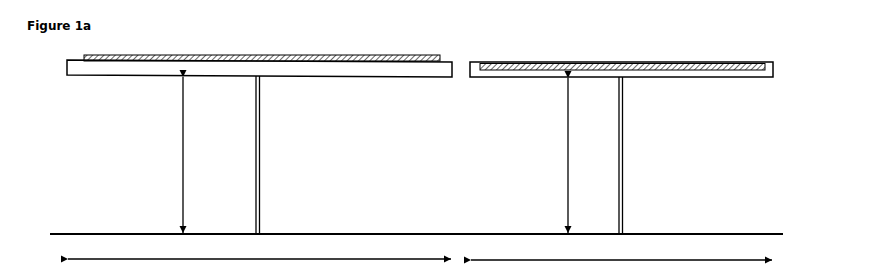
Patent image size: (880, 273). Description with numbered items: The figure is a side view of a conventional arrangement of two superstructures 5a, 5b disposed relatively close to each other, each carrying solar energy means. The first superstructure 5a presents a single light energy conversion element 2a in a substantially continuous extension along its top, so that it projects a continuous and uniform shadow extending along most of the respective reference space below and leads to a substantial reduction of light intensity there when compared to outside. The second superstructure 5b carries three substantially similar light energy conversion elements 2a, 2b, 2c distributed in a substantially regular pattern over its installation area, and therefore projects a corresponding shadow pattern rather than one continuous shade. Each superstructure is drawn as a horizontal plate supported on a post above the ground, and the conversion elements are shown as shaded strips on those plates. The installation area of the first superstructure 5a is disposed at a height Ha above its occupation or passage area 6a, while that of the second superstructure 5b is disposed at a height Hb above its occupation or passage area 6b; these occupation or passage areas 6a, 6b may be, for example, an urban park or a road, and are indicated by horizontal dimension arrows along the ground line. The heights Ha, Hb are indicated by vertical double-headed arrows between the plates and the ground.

The light energy conversion element 2a is at (262, 52).
The light energy conversion element 2b is at (622, 58).
The light energy conversion element 2c is at (622, 58).
The first superstructure 5a is at (281, 155).
The second superstructure 5b is at (642, 155).
The height Ha is at (199, 155).
The height Hb is at (584, 155).
The occupation/passage area 6a is at (259, 251).
The occupation/passage area 6b is at (621, 251).